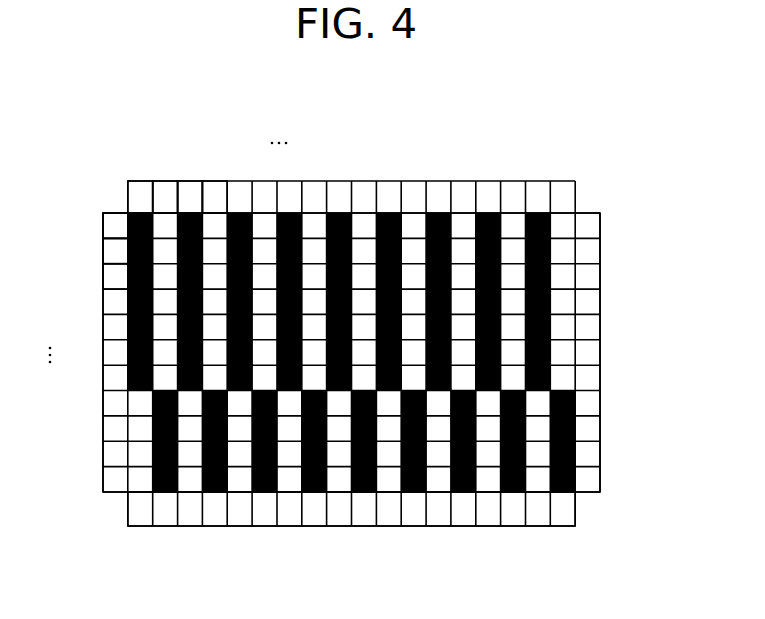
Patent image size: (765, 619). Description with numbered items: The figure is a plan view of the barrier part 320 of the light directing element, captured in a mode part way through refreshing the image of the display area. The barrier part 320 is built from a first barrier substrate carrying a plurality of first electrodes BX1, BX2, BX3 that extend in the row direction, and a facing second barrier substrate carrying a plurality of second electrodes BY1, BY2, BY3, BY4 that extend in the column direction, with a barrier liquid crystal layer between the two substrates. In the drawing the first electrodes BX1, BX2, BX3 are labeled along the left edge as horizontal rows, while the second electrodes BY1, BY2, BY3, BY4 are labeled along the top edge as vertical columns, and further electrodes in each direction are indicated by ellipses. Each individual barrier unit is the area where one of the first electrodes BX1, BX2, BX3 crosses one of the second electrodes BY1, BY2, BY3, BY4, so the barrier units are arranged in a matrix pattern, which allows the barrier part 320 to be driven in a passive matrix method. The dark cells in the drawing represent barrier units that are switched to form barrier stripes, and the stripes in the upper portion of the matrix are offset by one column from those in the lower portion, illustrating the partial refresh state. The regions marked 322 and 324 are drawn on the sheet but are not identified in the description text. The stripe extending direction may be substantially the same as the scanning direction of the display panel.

The barrier part 320 is at (407, 148).
The pixel region (active area) 322 is at (600, 439).
The dummy pixel row 324 is at (487, 527).
The second electrode BY1 is at (138, 185).
The second electrode BY2 is at (162, 185).
The second electrode BY3 is at (188, 185).
The second electrode BY4 is at (213, 185).
The first electrode BX1 is at (103, 225).
The first electrode BX2 is at (103, 250).
The first electrode BX3 is at (103, 276).